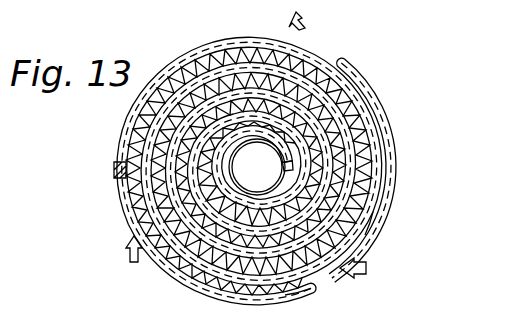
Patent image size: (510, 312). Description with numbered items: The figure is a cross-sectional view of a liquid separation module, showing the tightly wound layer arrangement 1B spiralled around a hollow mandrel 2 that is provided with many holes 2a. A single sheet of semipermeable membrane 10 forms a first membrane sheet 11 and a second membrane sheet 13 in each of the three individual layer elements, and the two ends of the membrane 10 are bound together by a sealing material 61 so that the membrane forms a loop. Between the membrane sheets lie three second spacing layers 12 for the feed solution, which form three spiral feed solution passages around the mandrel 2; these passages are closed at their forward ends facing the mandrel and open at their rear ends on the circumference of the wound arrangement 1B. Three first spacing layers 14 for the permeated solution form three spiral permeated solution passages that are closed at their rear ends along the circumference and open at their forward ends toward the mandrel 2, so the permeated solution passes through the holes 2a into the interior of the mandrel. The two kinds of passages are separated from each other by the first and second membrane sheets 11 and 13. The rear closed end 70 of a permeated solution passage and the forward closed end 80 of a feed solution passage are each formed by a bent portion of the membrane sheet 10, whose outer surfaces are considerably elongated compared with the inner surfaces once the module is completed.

The semipermeable membrane sheet 10 is at (427, 133).
The first membrane sheet 11 is at (176, 63).
The second spacing layer 12 is at (216, 58).
The second membrane sheet 13 is at (243, 55).
The first spacing layer 14 is at (270, 58).
The rear closed end of the permeated solution passage 70 is at (345, 60).
The forward closed end of the feed solution passage 80 is at (346, 246).
The tightly wound layer arrangement 1B is at (429, 208).
The hollow mandrel 2 is at (222, 178).
The holes 2a is at (290, 173).
The sealing material 61 is at (114, 168).